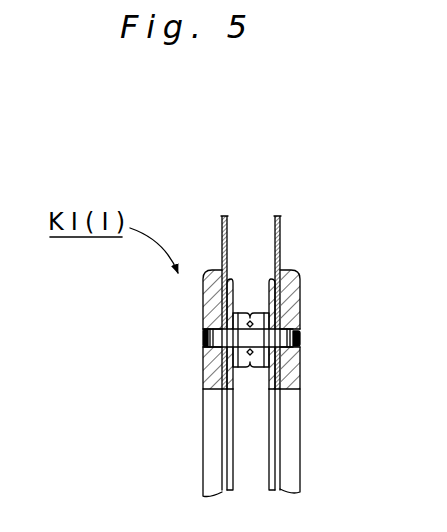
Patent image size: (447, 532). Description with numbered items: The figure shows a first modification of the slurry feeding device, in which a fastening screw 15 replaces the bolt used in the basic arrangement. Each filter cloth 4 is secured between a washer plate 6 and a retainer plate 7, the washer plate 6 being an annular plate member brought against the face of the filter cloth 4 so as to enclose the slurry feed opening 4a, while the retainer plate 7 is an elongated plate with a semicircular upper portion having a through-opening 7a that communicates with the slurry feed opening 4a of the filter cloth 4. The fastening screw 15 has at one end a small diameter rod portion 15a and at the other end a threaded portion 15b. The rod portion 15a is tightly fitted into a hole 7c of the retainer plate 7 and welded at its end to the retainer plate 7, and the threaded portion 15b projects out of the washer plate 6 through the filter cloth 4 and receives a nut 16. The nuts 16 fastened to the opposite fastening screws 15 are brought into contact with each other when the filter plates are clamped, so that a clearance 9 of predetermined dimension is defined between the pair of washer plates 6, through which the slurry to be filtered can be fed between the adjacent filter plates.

The filter cloth 4 is at (219, 236).
The slurry feed opening 4a is at (278, 438).
The washer plate 6 is at (235, 276).
The retainer plate 7 is at (302, 280).
The through-opening 7a is at (290, 408).
The hole 7c is at (302, 354).
The clearance 9 is at (253, 457).
The fastening screw 15 is at (199, 340).
The rod portion 15a is at (297, 340).
The threaded portion 15b is at (301, 326).
The nut 16 is at (240, 335).